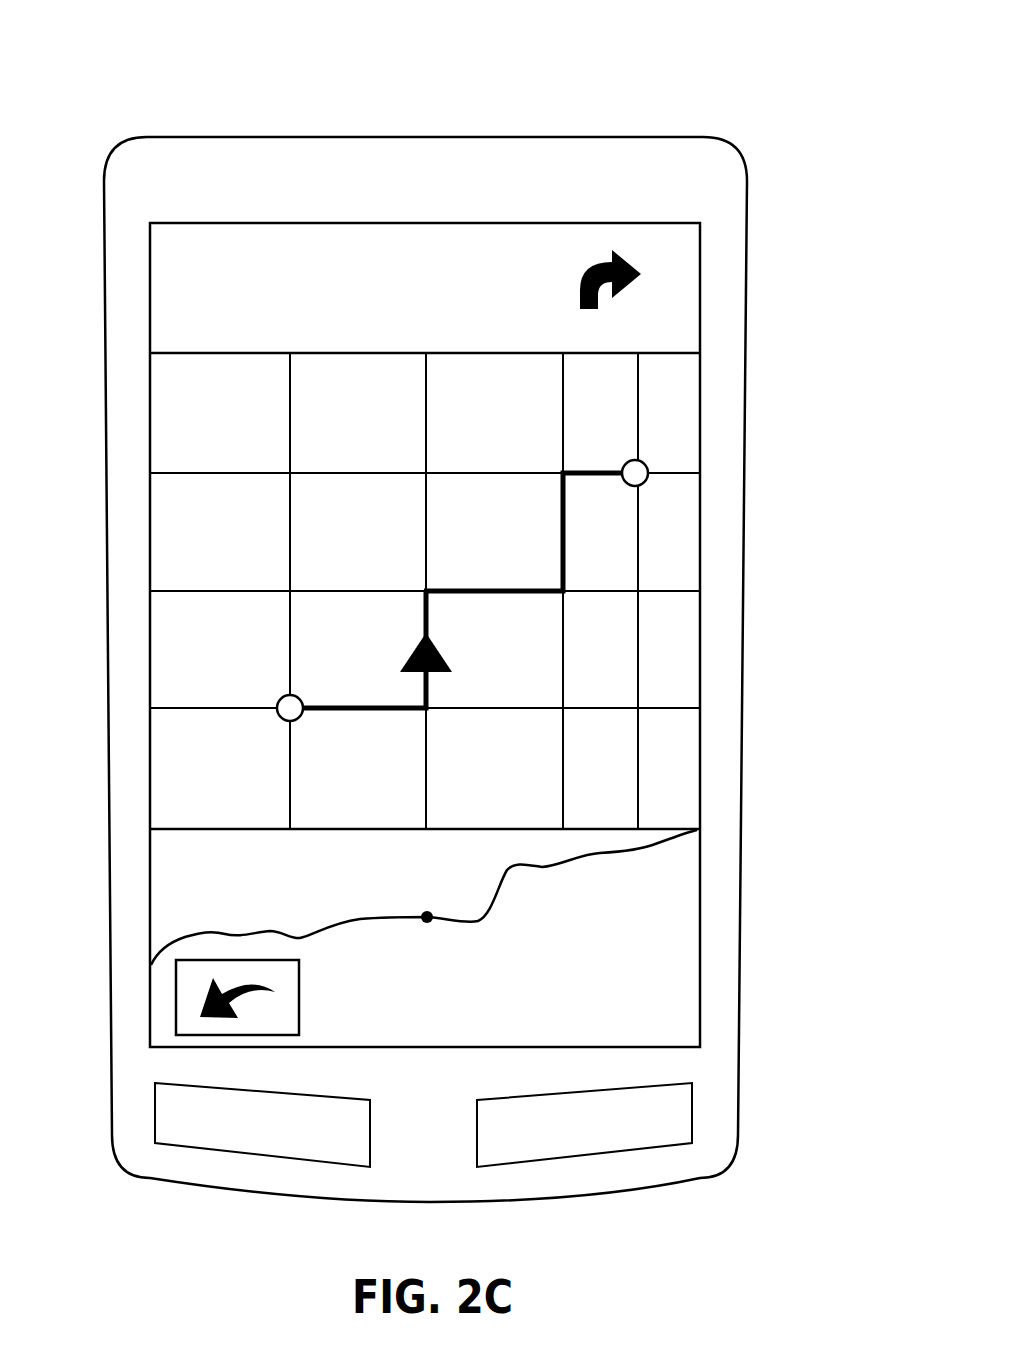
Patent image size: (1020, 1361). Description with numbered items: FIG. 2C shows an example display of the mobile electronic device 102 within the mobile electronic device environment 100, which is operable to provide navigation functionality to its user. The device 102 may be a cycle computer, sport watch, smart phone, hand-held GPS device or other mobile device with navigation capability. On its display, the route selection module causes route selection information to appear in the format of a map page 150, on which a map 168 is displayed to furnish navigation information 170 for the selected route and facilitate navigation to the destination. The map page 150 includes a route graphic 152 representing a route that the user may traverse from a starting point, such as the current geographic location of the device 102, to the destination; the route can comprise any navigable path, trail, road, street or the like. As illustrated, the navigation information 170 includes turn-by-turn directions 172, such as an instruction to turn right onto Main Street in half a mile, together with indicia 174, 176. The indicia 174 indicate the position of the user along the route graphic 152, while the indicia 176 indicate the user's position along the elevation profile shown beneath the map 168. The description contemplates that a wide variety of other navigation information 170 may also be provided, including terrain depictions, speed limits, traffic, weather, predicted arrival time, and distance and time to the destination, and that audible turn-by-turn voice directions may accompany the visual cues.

The mobile electronic device environment 100 is at (645, 74).
The mobile electronic device 102 is at (677, 135).
The map page 150 is at (458, 728).
The route graphic 152 is at (500, 588).
The map 168 is at (683, 438).
The navigation information 170 is at (690, 293).
The turn-by-turn directions 172 is at (165, 290).
The indicia 174 is at (440, 652).
The indicia 176 is at (430, 910).